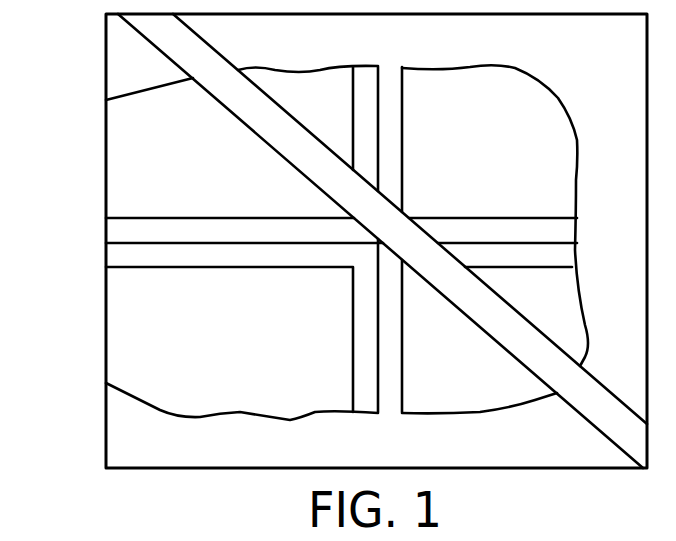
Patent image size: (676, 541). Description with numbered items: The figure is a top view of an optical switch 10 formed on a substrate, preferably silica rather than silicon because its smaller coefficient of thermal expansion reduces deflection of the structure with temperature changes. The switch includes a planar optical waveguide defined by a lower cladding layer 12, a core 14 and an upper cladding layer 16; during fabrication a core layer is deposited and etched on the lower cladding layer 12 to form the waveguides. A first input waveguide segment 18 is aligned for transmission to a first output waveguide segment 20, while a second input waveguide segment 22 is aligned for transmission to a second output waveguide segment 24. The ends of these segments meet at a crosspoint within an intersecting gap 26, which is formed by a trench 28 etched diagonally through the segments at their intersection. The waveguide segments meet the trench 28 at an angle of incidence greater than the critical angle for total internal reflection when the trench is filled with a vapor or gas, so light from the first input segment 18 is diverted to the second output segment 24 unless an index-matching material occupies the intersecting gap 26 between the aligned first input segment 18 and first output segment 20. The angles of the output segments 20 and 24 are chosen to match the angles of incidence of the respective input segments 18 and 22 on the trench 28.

The optical switch 10 is at (78, 71).
The lower cladding layer 12 is at (118, 362).
The core 14 is at (158, 268).
The upper cladding layer 16 is at (118, 433).
The first input waveguide segment 18 is at (195, 228).
The first output waveguide segment 20 is at (525, 230).
The second input waveguide segment 22 is at (393, 162).
The second output waveguide segment 24 is at (363, 310).
The intersecting gap 26 is at (392, 232).
The trench 28 is at (215, 60).